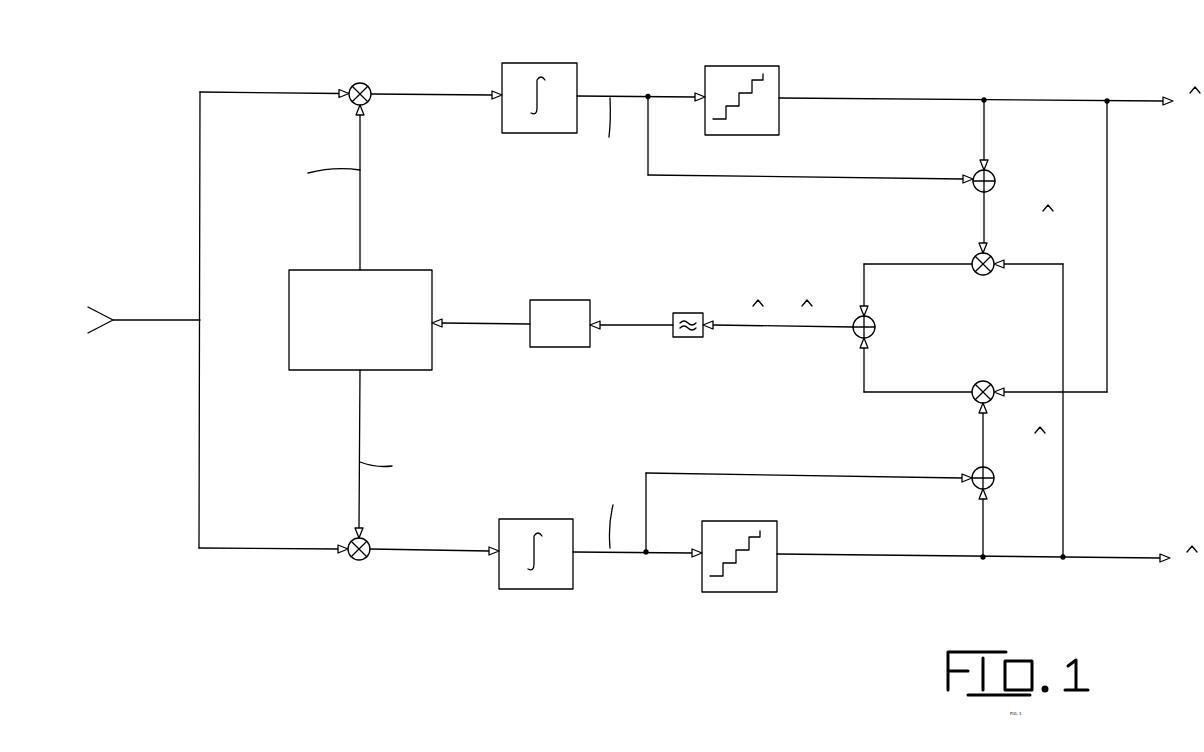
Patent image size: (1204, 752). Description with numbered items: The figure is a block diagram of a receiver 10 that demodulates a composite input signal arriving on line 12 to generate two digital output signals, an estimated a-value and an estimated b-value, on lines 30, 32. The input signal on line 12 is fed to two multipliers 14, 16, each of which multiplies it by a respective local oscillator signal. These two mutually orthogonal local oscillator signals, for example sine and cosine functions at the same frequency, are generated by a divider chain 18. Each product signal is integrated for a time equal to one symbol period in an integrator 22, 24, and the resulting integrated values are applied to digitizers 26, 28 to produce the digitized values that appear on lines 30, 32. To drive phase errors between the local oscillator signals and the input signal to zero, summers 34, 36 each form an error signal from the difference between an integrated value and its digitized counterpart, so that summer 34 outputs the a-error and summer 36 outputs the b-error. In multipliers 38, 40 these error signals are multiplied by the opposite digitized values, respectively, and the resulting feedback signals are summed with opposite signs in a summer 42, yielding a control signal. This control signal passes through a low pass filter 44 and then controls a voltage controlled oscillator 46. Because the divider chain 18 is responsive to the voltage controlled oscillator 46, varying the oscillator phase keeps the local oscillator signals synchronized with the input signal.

The receiver 10 is at (646, 254).
The line 12 is at (192, 318).
The multiplier 14 is at (368, 83).
The multiplier 16 is at (356, 562).
The divider chain 18 is at (432, 287).
The integrator 22 is at (537, 63).
The integrator 24 is at (537, 589).
The digitizer 26 is at (740, 66).
The digitizer 28 is at (720, 592).
The line 30 is at (1138, 98).
The line 32 is at (1100, 562).
The summer 34 is at (997, 181).
The summer 36 is at (975, 488).
The multiplier 38 is at (983, 275).
The multiplier 40 is at (975, 400).
The summer 42 is at (876, 328).
The low pass filter 44 is at (692, 338).
The voltage controlled oscillator 46 is at (556, 347).